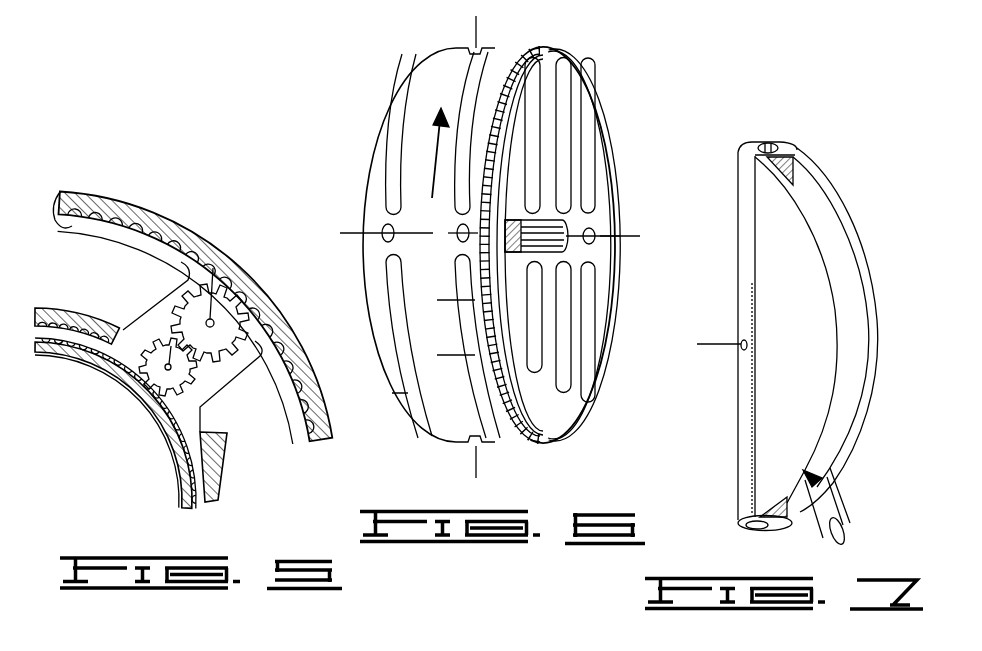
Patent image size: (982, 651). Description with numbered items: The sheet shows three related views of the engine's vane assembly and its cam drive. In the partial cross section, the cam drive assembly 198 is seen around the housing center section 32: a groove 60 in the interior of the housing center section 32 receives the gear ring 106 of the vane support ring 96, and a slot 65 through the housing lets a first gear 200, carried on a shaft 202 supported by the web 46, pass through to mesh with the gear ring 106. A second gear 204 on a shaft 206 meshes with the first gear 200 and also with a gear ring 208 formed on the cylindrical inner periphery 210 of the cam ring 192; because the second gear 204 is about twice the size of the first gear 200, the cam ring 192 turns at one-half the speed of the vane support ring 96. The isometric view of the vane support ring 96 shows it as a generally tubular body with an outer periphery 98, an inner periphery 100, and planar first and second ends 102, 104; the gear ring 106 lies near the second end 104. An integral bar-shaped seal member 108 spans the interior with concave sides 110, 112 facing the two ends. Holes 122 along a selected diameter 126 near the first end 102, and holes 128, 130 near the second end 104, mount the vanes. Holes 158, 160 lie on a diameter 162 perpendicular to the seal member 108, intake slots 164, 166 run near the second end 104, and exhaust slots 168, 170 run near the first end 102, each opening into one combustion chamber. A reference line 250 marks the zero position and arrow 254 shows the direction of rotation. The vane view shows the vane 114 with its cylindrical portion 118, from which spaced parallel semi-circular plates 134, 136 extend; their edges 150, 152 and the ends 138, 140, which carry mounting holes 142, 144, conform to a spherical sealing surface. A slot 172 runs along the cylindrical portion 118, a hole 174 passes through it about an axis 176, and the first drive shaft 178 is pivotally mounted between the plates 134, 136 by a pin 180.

In FIG. 5, the housing center section 32 is at (44, 305).
In FIG. 5, the web 46 is at (218, 388).
In FIG. 5, the groove 60 is at (92, 312).
In FIG. 5, the slot 65 is at (118, 328).
In FIG. 5, the vane support ring 96 is at (72, 352).
In FIG. 6, the vane support ring 96 is at (612, 84).
In FIG. 6, the outer periphery 98 is at (446, 245).
In FIG. 6, the inner periphery 100 is at (602, 140).
In FIG. 6, the first end 102 is at (370, 118).
In FIG. 6, the second end 104 is at (612, 152).
In FIG. 5, the gear ring 106 is at (120, 370).
In FIG. 6, the gear ring 106 is at (532, 54).
In FIG. 6, the seal member 108 is at (548, 222).
In FIG. 6, the concave side 110 is at (505, 258).
In FIG. 6, the concave side 112 is at (578, 248).
In FIG. 7, the vane 114 is at (826, 126).
In FIG. 7, the cylindrical portion 118 is at (744, 244).
In FIG. 6, the hole 122 is at (376, 238).
In FIG. 6, the selected diameter 126 is at (348, 210).
In FIG. 6, the hole 128 is at (456, 246).
In FIG. 6, the hole 130 is at (606, 232).
In FIG. 7, the semi-circular plate 134 is at (776, 212).
In FIG. 7, the semi-circular plate 136 is at (818, 206).
In FIG. 7, the end 138 is at (752, 142).
In FIG. 7, the end 140 is at (742, 530).
In FIG. 7, the hole 142 is at (770, 144).
In FIG. 7, the hole 144 is at (760, 530).
In FIG. 7, the edge 150 is at (822, 262).
In FIG. 6, the edge 152 is at (624, 238).
In FIG. 7, the edge 152 is at (874, 316).
In FIG. 6, the hole 158 is at (470, 444).
In FIG. 6, the hole 160 is at (474, 50).
In FIG. 6, the diameter 162 is at (478, 34).
In FIG. 6, the intake slot 164 is at (590, 356).
In FIG. 6, the intake slot 166 is at (588, 112).
In FIG. 6, the exhaust slot 168 is at (390, 312).
In FIG. 6, the exhaust slot 170 is at (392, 85).
In FIG. 7, the slot 172 is at (792, 176).
In FIG. 7, the hole 174 is at (748, 334).
In FIG. 7, the axis 176 is at (718, 346).
In FIG. 7, the first drive shaft 178 is at (818, 486).
In FIG. 7, the pin 180 is at (742, 352).
In FIG. 5, the cam ring 192 is at (120, 214).
In FIG. 5, the cam drive assembly 198 is at (244, 296).
In FIG. 5, the first gear 200 is at (140, 398).
In FIG. 5, the shaft 202 is at (162, 412).
In FIG. 5, the second gear 204 is at (246, 312).
In FIG. 5, the shaft 206 is at (214, 268).
In FIG. 5, the gear ring 208 is at (95, 206).
In FIG. 5, the cylindrical inner periphery 210 is at (62, 200).
In FIG. 6, the line 250 is at (440, 238).
In FIG. 6, the arrow 254 is at (432, 190).